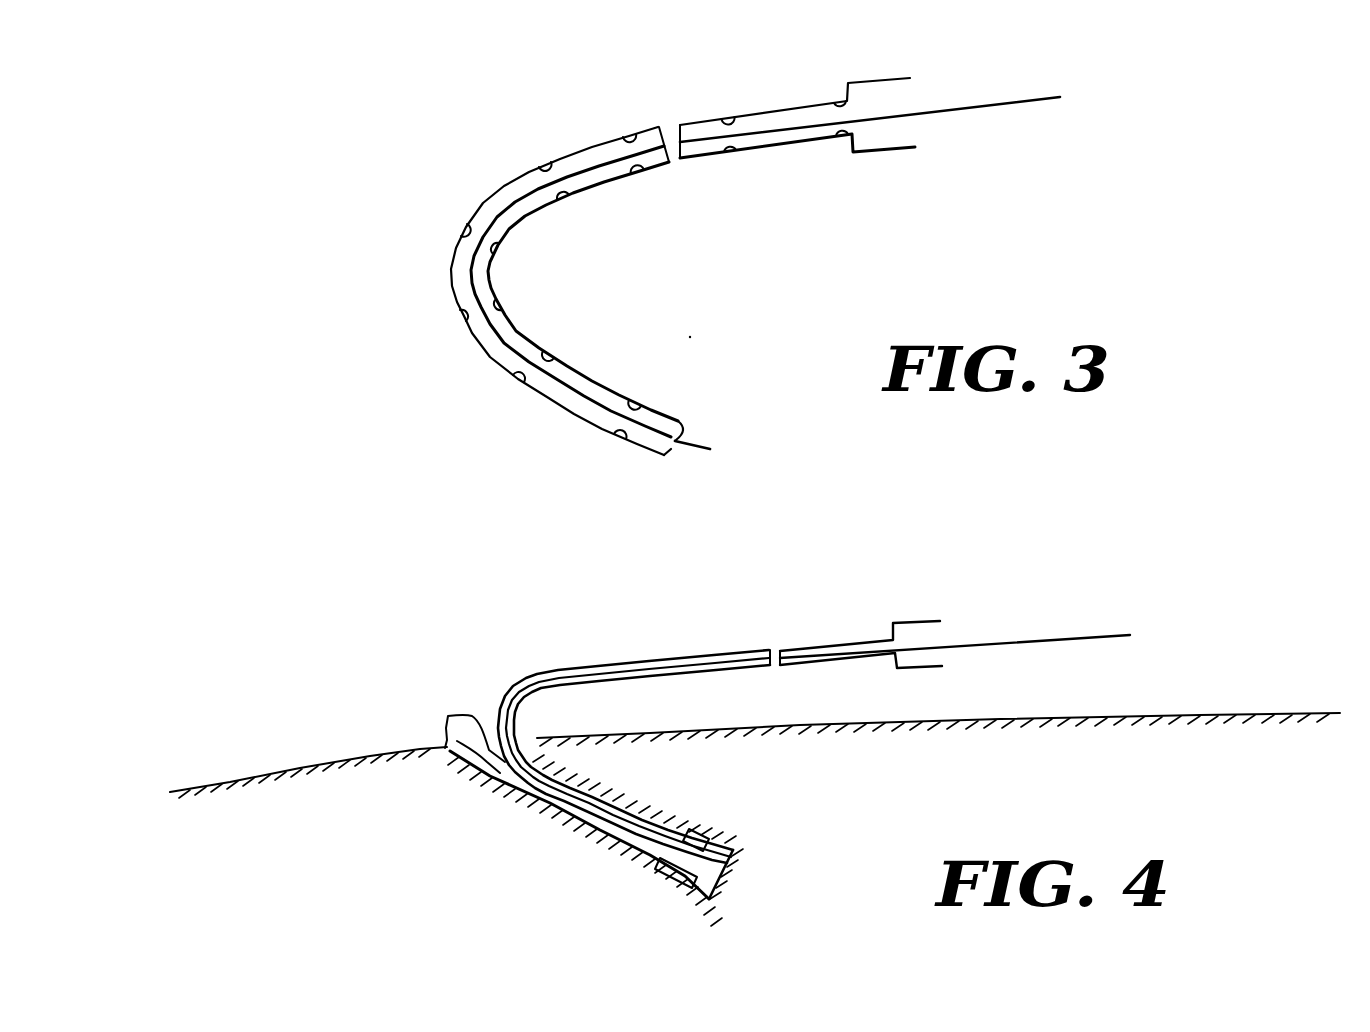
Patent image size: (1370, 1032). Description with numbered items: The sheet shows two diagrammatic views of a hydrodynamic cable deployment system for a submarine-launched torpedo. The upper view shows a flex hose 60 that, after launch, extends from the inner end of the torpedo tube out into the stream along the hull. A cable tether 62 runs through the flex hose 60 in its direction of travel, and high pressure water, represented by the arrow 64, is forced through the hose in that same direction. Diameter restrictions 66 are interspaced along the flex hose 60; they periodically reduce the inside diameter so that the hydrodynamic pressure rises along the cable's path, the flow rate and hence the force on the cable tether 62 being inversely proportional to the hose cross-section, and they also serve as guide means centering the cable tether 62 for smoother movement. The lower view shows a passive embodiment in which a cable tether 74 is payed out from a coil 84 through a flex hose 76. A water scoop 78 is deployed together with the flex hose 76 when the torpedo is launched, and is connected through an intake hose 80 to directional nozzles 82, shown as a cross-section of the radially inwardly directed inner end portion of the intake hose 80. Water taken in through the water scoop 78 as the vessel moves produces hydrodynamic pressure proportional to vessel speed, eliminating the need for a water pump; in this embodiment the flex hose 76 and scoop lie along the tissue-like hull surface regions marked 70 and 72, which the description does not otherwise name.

In FIG. 3, the flex hose 60 is at (491, 352).
In FIG. 3, the cable tether 62 is at (1004, 102).
In FIG. 3, the high pressure water 64 is at (657, 425).
In FIG. 3, the diameter restrictions 66 is at (549, 167).
In FIG. 4, the tissue surface 70 is at (983, 724).
In FIG. 4, the tissue incision surface 72 is at (482, 770).
In FIG. 4, the cable tether 74 is at (987, 643).
In FIG. 4, the flex hose 76 is at (594, 666).
In FIG. 4, the water scoop 78 is at (470, 715).
In FIG. 4, the intake hose 80 is at (553, 808).
In FIG. 4, the directional nozzles 82 is at (733, 856).
In FIG. 4, the coil 84 is at (698, 836).